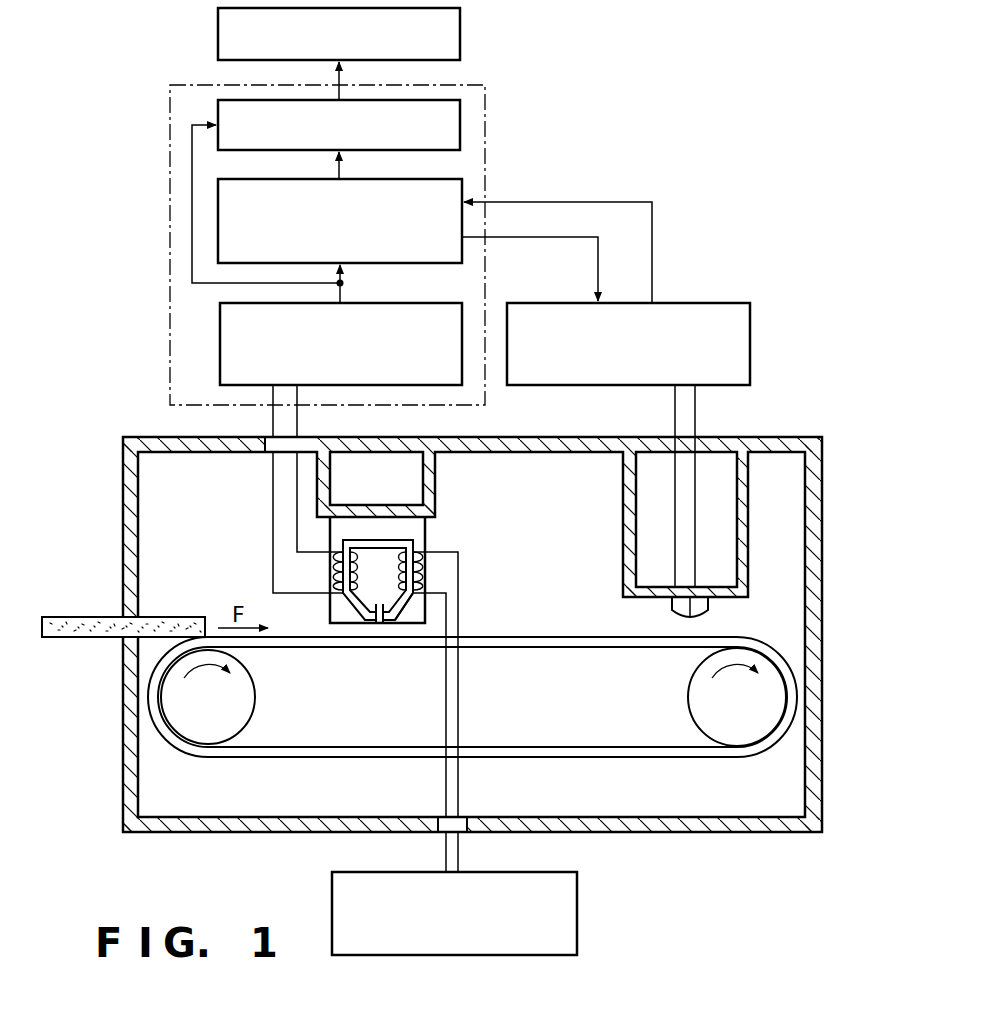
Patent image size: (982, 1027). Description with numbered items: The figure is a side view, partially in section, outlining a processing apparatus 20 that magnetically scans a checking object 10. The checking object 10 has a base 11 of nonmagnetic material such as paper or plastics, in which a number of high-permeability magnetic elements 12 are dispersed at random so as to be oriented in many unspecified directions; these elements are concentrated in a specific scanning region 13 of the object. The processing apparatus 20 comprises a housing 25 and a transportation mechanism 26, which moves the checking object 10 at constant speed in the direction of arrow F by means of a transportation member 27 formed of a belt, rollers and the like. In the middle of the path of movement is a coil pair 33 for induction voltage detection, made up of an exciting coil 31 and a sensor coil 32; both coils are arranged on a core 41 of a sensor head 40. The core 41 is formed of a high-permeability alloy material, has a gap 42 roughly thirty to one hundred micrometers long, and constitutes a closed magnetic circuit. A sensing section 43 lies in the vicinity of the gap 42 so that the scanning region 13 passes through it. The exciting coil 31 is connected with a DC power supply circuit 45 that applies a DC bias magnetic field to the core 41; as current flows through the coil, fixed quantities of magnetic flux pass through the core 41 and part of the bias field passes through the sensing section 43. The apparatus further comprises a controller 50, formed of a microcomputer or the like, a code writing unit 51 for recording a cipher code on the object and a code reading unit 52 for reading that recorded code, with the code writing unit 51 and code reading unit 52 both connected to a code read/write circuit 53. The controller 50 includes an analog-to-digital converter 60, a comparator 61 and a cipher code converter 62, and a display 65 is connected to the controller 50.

The checking object 10 is at (76, 600).
The base 11 is at (112, 616).
The high-permeability magnetic elements 12 is at (124, 637).
The scanning region 13 is at (182, 616).
The processing apparatus 20 is at (703, 196).
The housing 25 is at (822, 535).
The transportation mechanism 26 is at (472, 721).
The transportation member 27 is at (556, 656).
The exciting coil 31 is at (440, 548).
The sensor coil 32 is at (338, 574).
The coil pair 33 is at (326, 654).
The sensor head 40 is at (330, 608).
The core 41 is at (408, 602).
The gap 42 is at (377, 624).
The sensing section 43 is at (384, 626).
The DC power supply circuit 45 is at (578, 912).
The controller 50 is at (169, 216).
The code writing unit 51 is at (671, 606).
The code reading unit 52 is at (709, 606).
The code read/write circuit 53 is at (716, 302).
The analog-to-digital converter 60 is at (405, 302).
The comparator 61 is at (462, 122).
The cipher code converter 62 is at (462, 186).
The display 65 is at (462, 32).